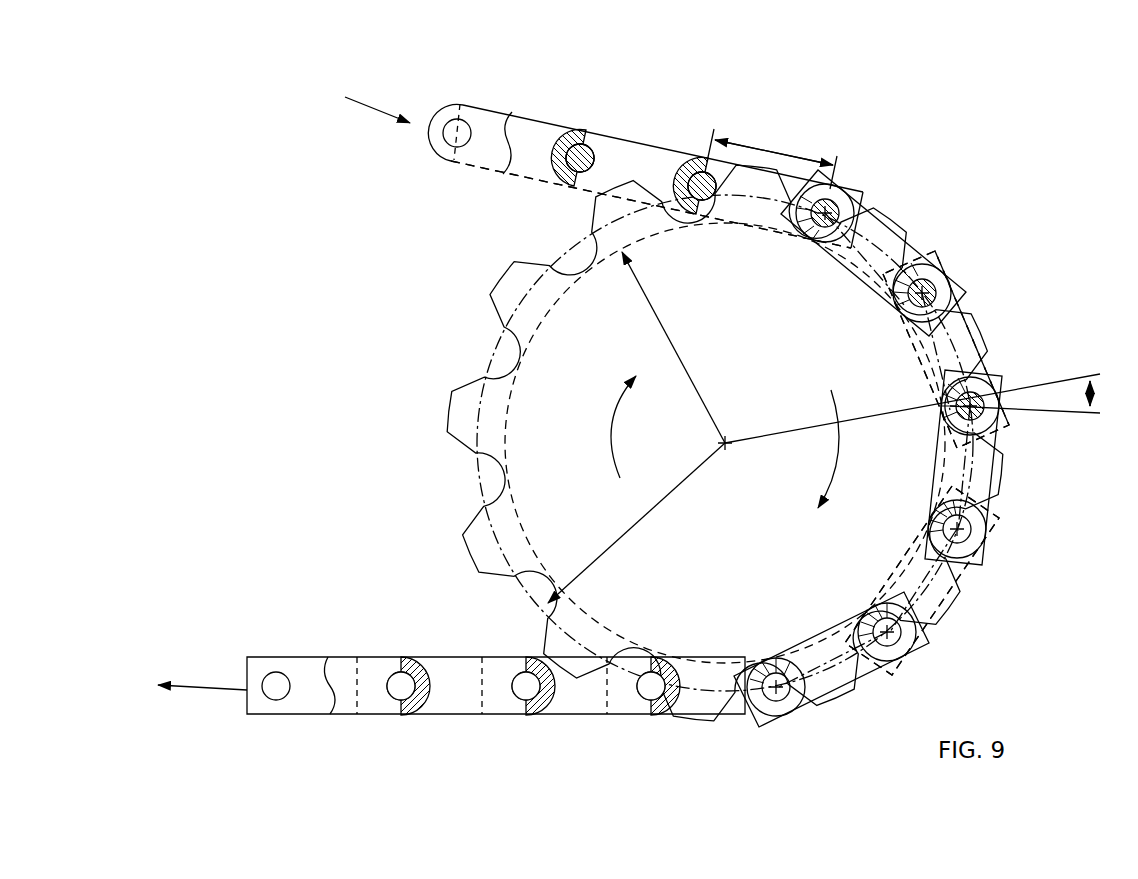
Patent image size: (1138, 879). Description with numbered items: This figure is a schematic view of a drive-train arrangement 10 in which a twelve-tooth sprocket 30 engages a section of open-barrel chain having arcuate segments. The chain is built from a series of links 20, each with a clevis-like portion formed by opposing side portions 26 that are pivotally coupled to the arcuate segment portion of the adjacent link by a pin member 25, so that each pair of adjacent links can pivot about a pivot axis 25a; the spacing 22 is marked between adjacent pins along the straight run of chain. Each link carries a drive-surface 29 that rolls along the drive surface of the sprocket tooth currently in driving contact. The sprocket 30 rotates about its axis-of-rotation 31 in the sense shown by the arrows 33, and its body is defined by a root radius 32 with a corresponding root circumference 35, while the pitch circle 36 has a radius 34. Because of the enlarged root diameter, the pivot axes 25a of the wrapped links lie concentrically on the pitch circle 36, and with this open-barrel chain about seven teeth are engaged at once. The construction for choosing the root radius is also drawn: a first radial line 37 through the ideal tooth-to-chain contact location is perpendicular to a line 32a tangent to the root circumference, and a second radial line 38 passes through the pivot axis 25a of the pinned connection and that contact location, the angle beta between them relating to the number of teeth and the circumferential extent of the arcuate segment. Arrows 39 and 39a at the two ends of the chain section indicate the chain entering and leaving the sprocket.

The chain drive 10 is at (919, 186).
The link 20 is at (523, 103).
The chain pitch 22 is at (792, 155).
The pin member 25 is at (472, 148).
The pivot axis 25a is at (906, 306).
The opposing side portions 26 is at (763, 236).
The drive-surface 29 is at (433, 152).
The sprocket 30 is at (456, 490).
The axis-of-rotation 31 is at (731, 438).
The radius 32 is at (622, 233).
The line tangent to the root circumference 32a is at (922, 366).
The arrows 33 is at (606, 436).
The radius 34 is at (545, 602).
The root circumference 35 is at (548, 315).
The pitch circle 36 is at (489, 330).
The first radial line 37 is at (1090, 374).
The second radial line 38 is at (1090, 418).
The chain entry direction 39 is at (384, 104).
The chain exit direction 39a is at (185, 690).